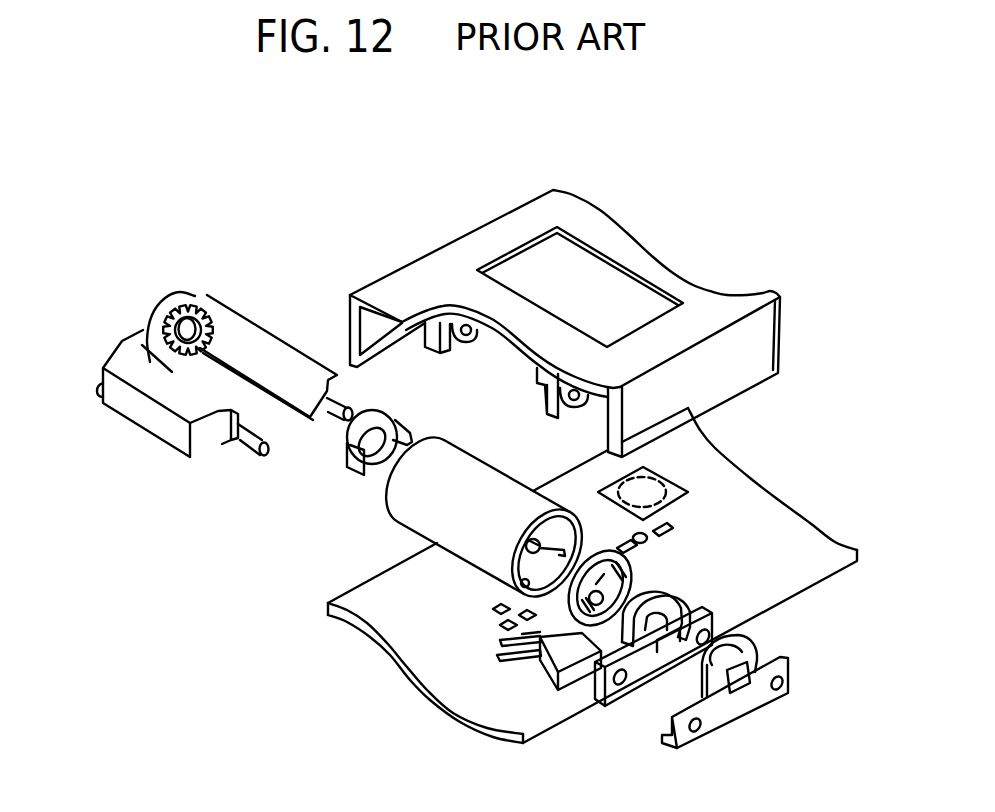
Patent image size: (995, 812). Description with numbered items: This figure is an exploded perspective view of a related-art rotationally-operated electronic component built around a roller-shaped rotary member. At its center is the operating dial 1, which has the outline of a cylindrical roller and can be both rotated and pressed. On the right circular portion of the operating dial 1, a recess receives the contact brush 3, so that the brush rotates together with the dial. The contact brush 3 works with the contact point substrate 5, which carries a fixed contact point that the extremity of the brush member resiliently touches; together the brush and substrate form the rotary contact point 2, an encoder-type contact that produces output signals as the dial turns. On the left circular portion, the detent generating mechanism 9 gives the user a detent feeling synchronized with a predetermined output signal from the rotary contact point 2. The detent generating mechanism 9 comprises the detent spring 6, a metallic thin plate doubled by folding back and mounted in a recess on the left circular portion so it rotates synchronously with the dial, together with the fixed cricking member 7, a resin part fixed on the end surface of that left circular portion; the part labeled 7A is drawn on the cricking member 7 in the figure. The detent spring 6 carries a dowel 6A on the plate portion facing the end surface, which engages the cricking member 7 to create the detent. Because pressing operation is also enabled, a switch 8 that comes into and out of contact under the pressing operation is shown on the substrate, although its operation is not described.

The operating dial 1 is at (463, 525).
The rotary contact point 2 is at (850, 420).
The contact brush 3 is at (623, 560).
The contact point substrate 5 is at (663, 600).
The detent spring 6 is at (360, 470).
The dowel 6A is at (353, 438).
The fixed cricking member 7 is at (161, 330).
The gear hub 7A is at (173, 352).
The switch 8 is at (653, 490).
The detent generating mechanism 9 is at (38, 472).